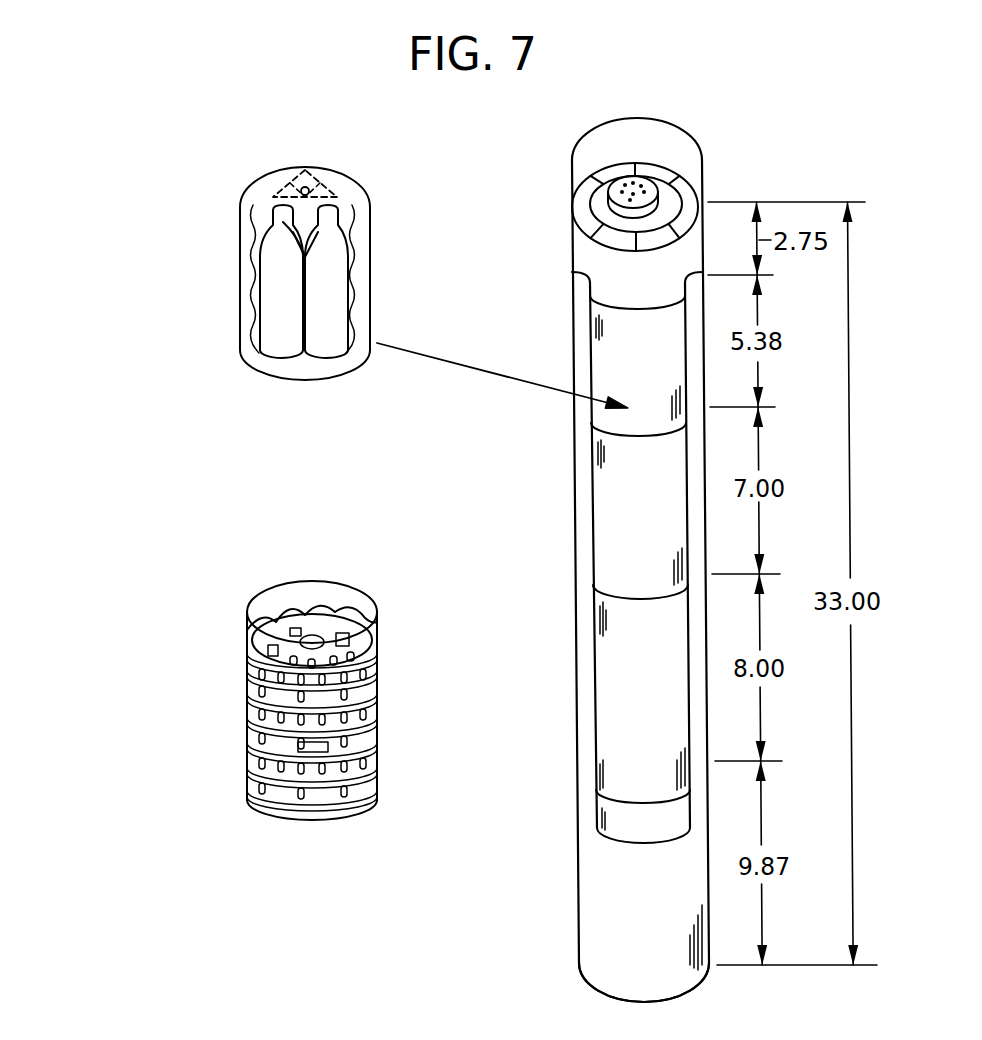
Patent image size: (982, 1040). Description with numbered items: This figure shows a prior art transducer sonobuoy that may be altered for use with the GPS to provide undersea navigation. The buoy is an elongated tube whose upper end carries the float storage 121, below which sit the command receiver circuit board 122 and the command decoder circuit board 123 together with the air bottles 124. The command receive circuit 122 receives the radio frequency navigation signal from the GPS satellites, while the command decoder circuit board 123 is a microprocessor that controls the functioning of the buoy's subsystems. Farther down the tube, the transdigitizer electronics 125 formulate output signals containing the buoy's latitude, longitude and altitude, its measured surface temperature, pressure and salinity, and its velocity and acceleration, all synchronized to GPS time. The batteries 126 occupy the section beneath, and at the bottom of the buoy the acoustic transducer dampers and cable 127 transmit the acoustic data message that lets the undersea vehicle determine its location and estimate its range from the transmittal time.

The float storage 121 is at (672, 147).
The command receive circuit 122 is at (264, 177).
The command decoder circuit board 123 is at (346, 175).
The 3 air bottles 124 is at (275, 338).
The transdigitizer electronics 125 is at (616, 520).
The batteries 126 is at (622, 715).
The acoustic transducer 127 is at (606, 959).